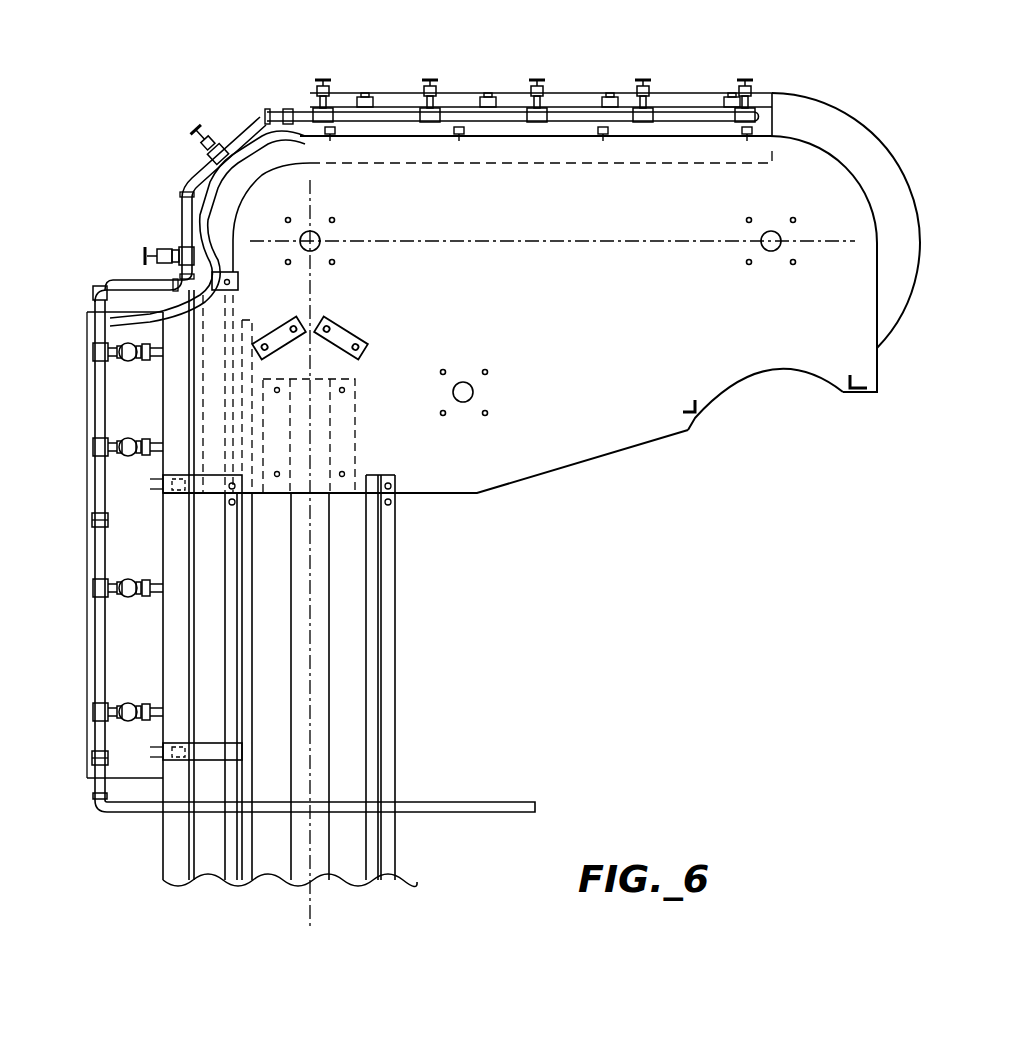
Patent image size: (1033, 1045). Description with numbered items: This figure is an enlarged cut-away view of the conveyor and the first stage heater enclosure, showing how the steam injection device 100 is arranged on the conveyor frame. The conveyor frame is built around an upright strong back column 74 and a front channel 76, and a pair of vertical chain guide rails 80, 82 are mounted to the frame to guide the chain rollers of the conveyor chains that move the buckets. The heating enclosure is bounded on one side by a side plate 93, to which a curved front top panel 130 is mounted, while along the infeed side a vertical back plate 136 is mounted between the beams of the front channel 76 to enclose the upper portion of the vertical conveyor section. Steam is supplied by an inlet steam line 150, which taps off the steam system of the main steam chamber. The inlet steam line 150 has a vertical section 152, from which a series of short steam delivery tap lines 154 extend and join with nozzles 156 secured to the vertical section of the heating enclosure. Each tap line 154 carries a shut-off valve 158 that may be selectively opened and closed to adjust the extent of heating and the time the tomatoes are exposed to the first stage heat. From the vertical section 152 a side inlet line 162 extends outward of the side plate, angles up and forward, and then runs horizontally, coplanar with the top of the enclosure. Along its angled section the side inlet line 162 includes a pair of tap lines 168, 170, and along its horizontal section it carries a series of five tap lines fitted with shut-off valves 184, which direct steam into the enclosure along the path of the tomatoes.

The upright strong back column 74 is at (320, 878).
The front channel 76 is at (248, 878).
The vertical chain guide rail 80 is at (232, 878).
The vertical chain guide rail 82 is at (392, 575).
The side plate 93 is at (752, 372).
The steam injection device 100 is at (570, 98).
The curved front top panel 130 is at (832, 103).
The vertical back plate 136 is at (150, 382).
The inlet steam line 150 is at (440, 812).
The vertical section 152 is at (85, 502).
The steam delivery tap line 154 is at (108, 348).
The nozzle 156 is at (128, 343).
The shut-off valve 158 is at (124, 360).
The side inlet line 162 is at (198, 163).
The tap line 168 is at (143, 250).
The tap line 170 is at (197, 122).
The shut-off valve 184 is at (323, 78).